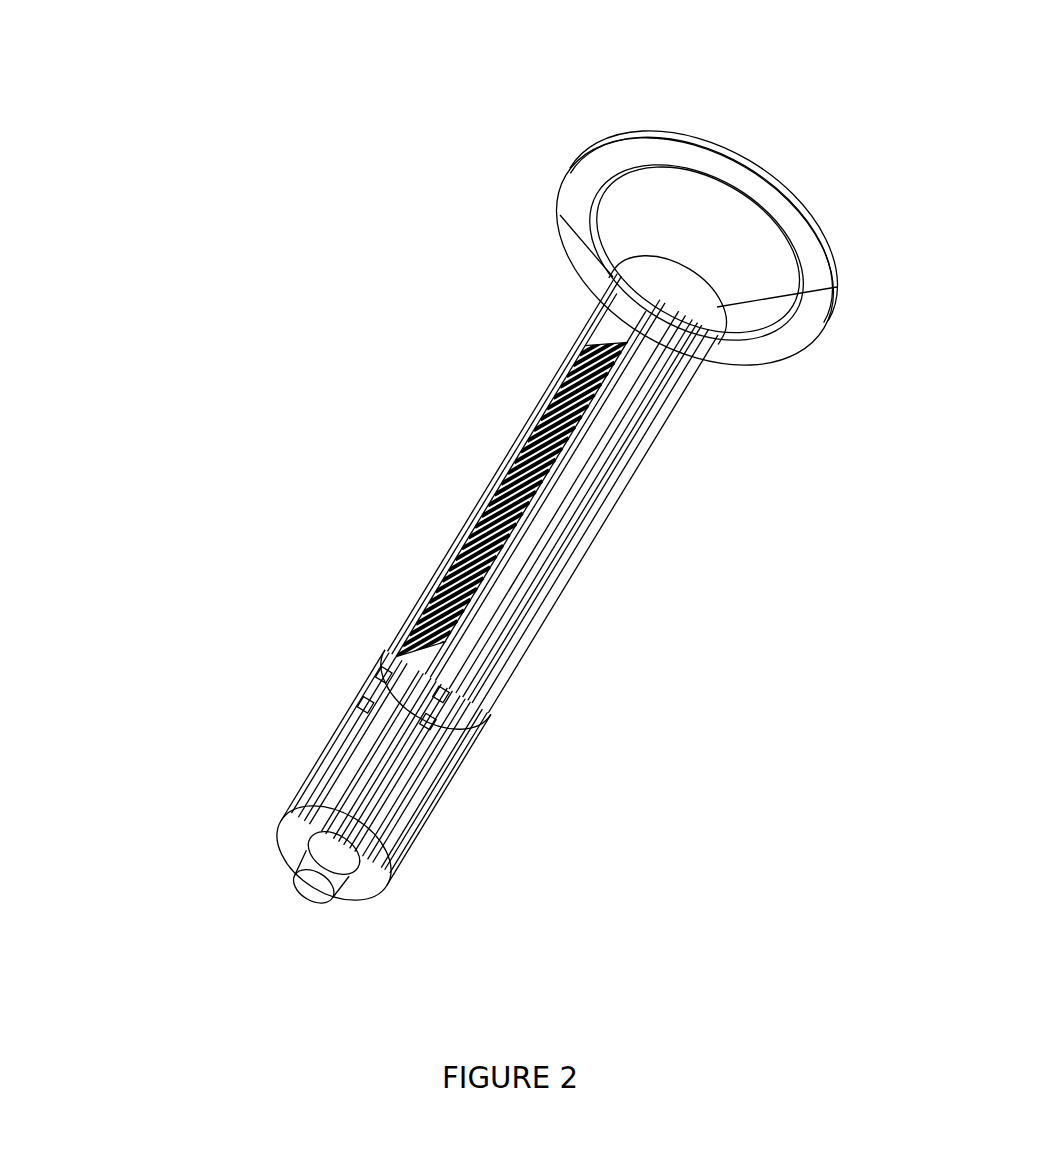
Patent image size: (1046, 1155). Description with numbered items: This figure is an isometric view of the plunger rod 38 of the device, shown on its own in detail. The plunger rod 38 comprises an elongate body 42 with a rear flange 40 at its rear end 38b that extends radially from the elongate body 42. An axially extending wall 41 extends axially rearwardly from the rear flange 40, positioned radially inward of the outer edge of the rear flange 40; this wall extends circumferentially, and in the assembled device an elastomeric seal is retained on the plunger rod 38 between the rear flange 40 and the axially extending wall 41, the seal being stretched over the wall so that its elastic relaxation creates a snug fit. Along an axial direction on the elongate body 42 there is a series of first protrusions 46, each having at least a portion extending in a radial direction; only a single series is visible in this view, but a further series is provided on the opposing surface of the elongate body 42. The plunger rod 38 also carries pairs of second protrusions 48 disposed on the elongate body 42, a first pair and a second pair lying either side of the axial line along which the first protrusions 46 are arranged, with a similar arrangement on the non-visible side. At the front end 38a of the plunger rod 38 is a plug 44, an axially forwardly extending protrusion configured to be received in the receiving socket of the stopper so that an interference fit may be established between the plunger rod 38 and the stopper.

The plunger rod 38 is at (317, 428).
The front end 38a is at (275, 915).
The rear end 38b is at (780, 142).
The rear flange 40 is at (593, 180).
The axially extending wall 41 is at (722, 150).
The elongate body 42 is at (562, 500).
The plug 44 is at (327, 868).
The first protrusions 46 is at (452, 617).
The second protrusions 48 is at (382, 677).